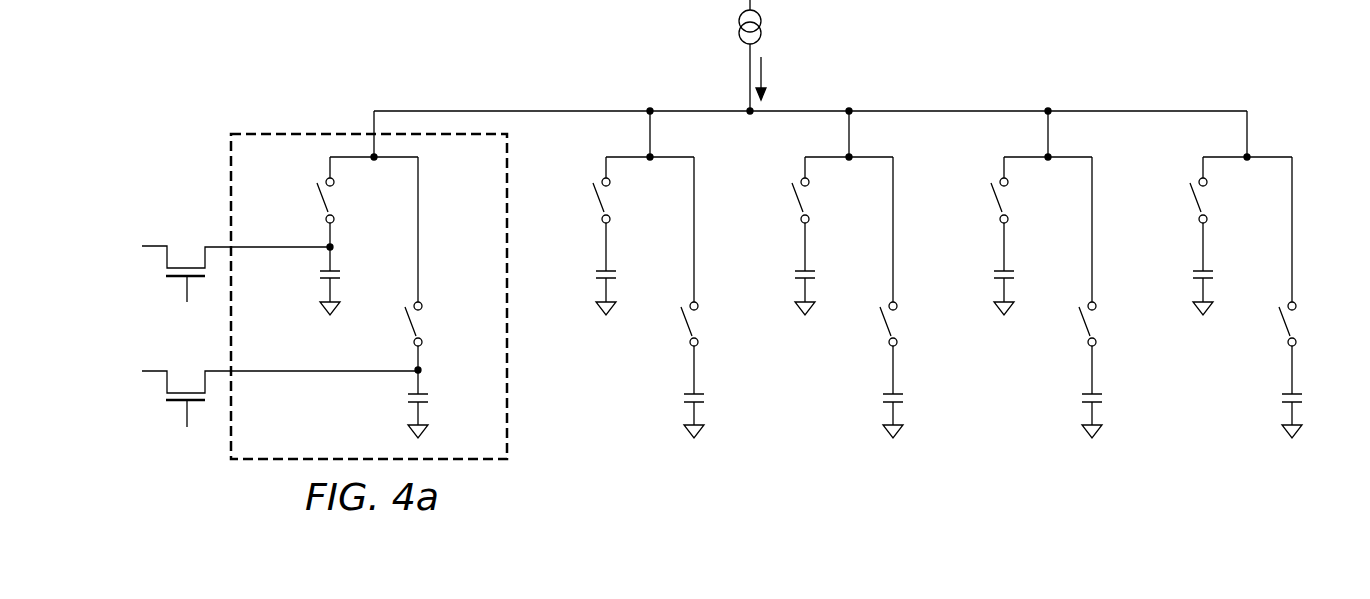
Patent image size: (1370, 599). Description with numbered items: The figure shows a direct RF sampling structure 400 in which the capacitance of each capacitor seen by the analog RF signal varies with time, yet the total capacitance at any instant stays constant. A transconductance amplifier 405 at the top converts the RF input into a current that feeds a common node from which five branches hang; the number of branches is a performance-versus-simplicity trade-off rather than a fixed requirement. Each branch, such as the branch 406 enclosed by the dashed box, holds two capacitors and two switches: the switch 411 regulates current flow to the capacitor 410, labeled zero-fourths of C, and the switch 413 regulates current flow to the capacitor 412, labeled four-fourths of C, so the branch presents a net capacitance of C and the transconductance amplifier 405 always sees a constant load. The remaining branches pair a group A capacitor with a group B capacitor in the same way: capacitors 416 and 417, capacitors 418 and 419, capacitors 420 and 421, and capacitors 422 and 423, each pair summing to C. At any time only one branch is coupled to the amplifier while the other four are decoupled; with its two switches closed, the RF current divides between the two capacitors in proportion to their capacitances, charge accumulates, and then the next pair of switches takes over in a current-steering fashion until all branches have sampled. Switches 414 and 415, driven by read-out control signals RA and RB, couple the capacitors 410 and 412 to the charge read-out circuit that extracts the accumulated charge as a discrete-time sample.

The direct RF sampling structure 400 is at (1108, 47).
The transconductance amplifier 405 is at (739, 22).
The branch 406 is at (270, 128).
The capacitor 410 is at (318, 273).
The switch 411 is at (322, 198).
The capacitor 412 is at (406, 396).
The switch 413 is at (410, 322).
The switch 414 is at (177, 281).
The switch 415 is at (177, 401).
The capacitor 416 is at (594, 273).
The capacitor 417 is at (681, 396).
The capacitor 418 is at (793, 273).
The capacitor 419 is at (880, 396).
The capacitor 420 is at (992, 273).
The capacitor 421 is at (1079, 396).
The capacitor 422 is at (1191, 273).
The capacitor 423 is at (1279, 396).